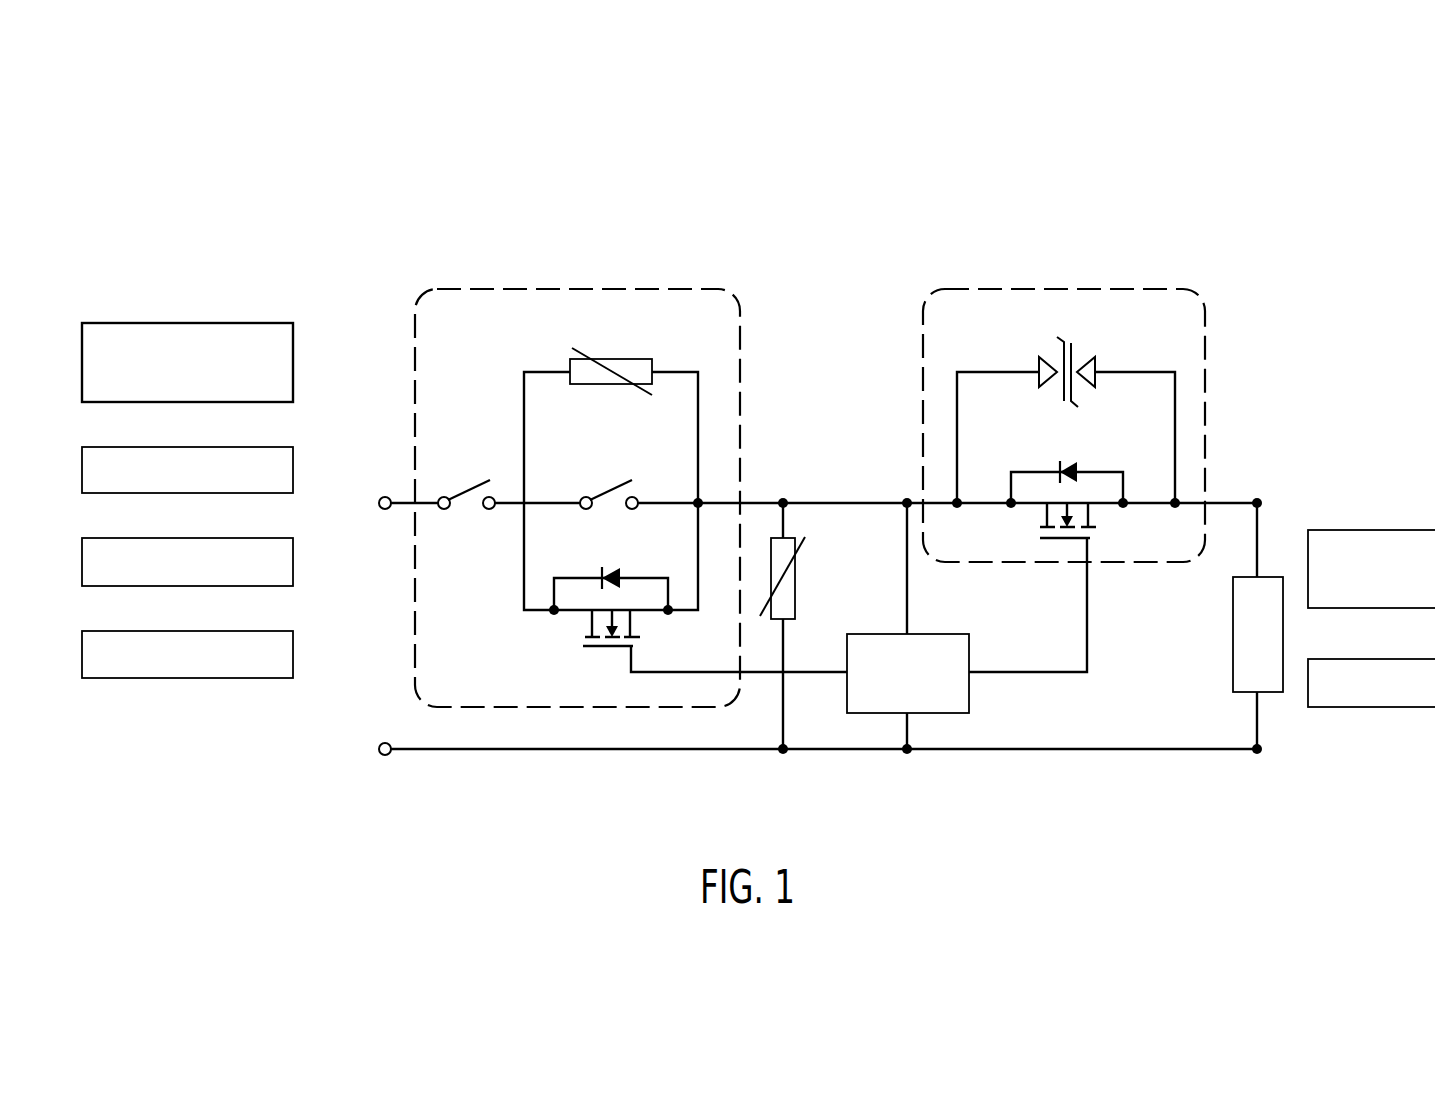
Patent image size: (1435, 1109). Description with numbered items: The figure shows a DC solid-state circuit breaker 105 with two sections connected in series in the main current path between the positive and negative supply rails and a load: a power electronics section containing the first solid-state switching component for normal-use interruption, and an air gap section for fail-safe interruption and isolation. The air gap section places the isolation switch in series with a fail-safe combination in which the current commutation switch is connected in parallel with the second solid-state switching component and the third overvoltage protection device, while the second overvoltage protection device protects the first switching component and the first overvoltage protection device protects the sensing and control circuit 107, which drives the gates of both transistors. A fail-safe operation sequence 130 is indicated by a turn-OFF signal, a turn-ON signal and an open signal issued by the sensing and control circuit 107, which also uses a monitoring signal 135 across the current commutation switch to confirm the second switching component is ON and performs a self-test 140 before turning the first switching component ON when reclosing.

The DC solid-state circuit breaker 105 is at (851, 190).
The sensing and control circuit 107 is at (969, 694).
The fail-safe operation sequence 130 is at (185, 322).
The monitoring signal 135 is at (1378, 529).
The self-test 140 is at (1378, 658).